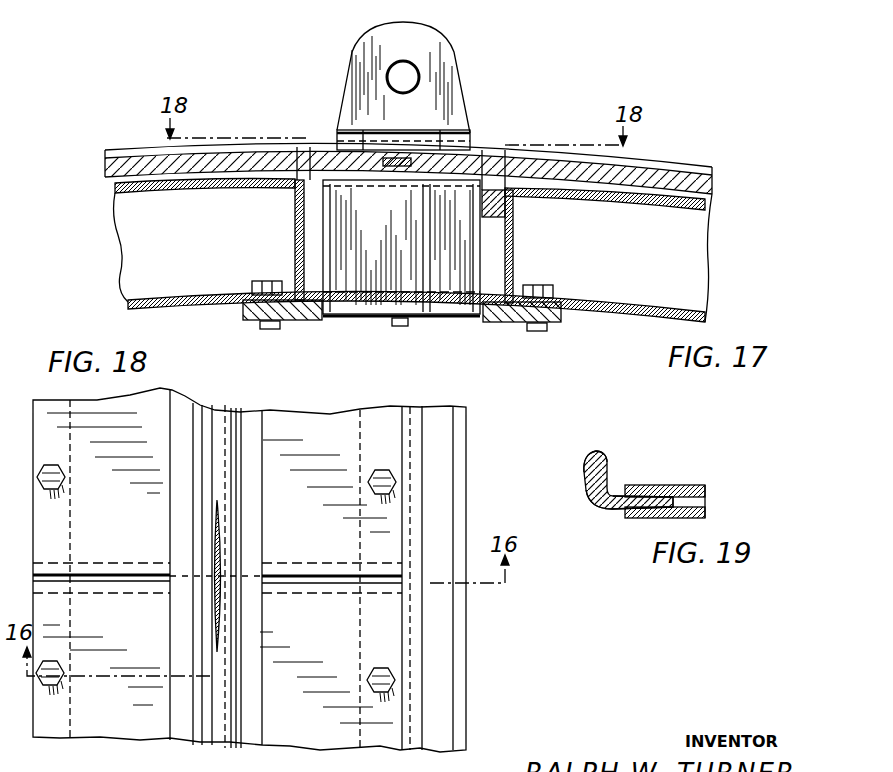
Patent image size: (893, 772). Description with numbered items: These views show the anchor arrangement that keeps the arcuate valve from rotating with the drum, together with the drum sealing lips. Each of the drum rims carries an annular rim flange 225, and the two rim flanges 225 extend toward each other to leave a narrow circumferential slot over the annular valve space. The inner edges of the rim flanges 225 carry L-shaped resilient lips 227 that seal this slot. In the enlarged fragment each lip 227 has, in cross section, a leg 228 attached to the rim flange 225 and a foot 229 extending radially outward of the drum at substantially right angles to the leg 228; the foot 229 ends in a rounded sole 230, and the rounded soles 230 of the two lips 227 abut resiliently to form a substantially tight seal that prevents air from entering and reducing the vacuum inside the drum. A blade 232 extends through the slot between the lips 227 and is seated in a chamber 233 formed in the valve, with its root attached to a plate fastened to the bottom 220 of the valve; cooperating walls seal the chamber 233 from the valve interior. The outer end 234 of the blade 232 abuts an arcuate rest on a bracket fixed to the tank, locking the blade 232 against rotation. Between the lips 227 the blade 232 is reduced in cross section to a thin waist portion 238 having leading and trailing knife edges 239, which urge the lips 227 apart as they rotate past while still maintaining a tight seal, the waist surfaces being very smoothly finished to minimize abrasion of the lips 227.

In FIG. 17, the bottom 220 is at (565, 312).
In FIG. 17, the rim flange 225 is at (586, 178).
In FIG. 18, the rim flange 225 is at (316, 560).
In FIG. 19, the rim flange 225 is at (663, 488).
In FIG. 18, the resilient lip 227 is at (217, 487).
In FIG. 19, the resilient lip 227 is at (608, 469).
In FIG. 19, the leg 228 is at (641, 506).
In FIG. 19, the foot 229 is at (600, 451).
In FIG. 19, the rounded sole 230 is at (586, 490).
In FIG. 17, the blade 232 is at (328, 125).
In FIG. 17, the chamber 233 is at (535, 240).
In FIG. 17, the outer end 234 is at (490, 56).
In FIG. 18, the thin waist portion 238 is at (217, 553).
In FIG. 18, the knife edge 239 is at (221, 507).